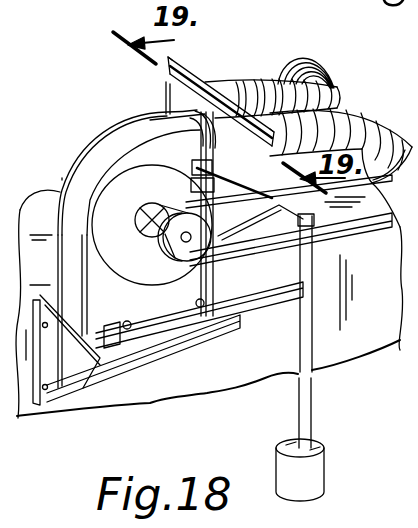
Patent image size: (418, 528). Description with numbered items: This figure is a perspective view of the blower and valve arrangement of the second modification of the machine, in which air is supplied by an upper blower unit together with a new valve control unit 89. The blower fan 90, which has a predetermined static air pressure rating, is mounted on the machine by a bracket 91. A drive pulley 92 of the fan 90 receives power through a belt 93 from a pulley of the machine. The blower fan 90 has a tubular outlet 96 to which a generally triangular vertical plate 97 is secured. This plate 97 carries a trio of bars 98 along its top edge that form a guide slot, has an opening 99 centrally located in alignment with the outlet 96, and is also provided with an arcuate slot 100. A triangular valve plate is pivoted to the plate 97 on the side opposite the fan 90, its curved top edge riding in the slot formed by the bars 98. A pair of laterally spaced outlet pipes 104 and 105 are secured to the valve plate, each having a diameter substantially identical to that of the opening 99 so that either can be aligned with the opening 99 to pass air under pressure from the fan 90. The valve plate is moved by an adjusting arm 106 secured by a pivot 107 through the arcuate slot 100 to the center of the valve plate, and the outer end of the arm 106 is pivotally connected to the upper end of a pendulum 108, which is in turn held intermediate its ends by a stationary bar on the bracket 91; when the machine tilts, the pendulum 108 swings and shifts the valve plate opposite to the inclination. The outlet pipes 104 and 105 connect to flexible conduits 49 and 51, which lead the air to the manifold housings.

The flexible conduit 49 is at (260, 84).
The flexible conduit 51 is at (362, 124).
The valve control unit 89 is at (146, 68).
The blower fan 90 is at (82, 150).
The bracket 91 is at (93, 375).
The drive pulley 92 is at (167, 261).
The belt 93 is at (370, 228).
The tubular outlet 96 is at (166, 108).
The vertical plate 97 is at (258, 167).
The bars 98 is at (394, 146).
The opening 99 is at (166, 88).
The arcuate slot 100 is at (192, 172).
The outlet pipe 104 is at (228, 85).
The outlet pipe 105 is at (268, 82).
The adjusting arm 106 is at (281, 218).
The pivot 107 is at (192, 187).
The pendulum 108 is at (312, 400).